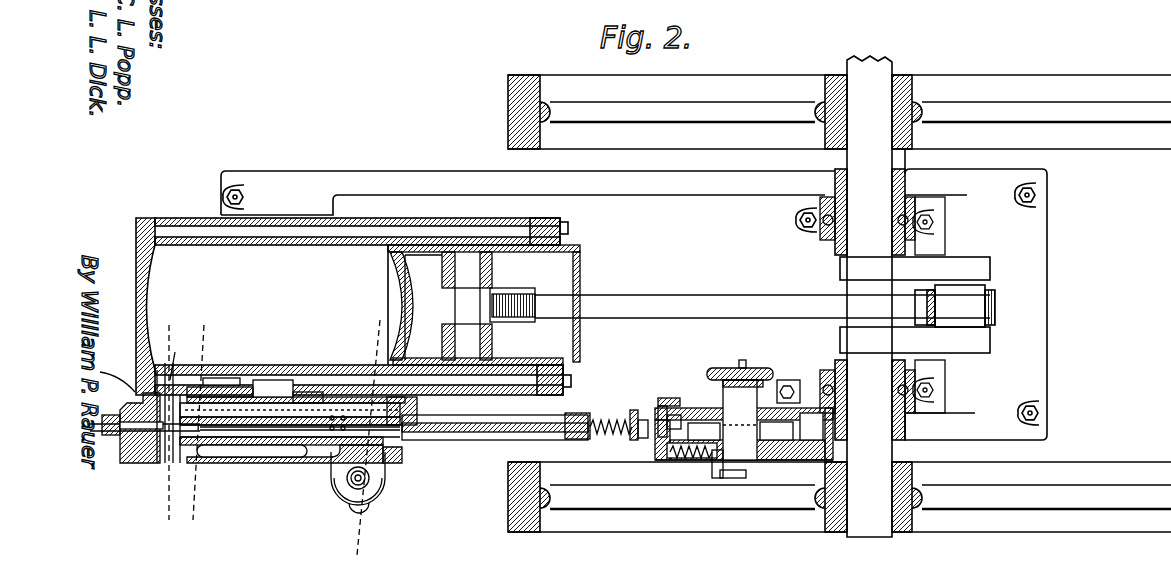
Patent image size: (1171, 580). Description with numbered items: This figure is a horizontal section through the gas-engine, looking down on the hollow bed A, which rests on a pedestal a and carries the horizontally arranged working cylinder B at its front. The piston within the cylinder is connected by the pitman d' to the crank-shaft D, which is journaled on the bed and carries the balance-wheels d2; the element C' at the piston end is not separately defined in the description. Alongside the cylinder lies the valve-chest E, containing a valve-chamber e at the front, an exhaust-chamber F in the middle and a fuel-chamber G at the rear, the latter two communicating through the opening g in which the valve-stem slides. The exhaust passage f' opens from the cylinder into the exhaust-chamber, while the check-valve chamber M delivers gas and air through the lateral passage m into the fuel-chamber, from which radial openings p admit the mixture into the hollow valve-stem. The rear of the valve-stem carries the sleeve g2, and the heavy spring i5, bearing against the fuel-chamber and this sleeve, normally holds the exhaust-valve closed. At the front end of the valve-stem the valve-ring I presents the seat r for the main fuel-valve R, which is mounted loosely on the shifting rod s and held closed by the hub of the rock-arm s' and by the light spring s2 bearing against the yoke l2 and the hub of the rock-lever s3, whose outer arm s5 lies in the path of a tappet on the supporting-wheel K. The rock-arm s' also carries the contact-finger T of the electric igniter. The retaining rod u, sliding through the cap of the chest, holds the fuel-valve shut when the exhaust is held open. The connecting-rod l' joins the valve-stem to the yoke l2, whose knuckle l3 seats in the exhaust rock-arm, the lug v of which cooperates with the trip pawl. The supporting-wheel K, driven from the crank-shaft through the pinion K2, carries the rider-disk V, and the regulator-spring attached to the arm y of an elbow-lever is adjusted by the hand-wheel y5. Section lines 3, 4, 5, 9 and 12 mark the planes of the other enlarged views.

The hollow bed A is at (430, 196).
The working cylinder B is at (353, 306).
The cylinder head / piston C' is at (470, 305).
The crank-shaft D is at (870, 296).
The pedestal a is at (905, 186).
The pitman d' is at (765, 305).
The balance-wheels d2 is at (839, 305).
The section line 3 3 is at (366, 440).
The section line 4 4 is at (196, 424).
The section line 5 5 is at (166, 424).
The shifting rod s is at (292, 430).
The supporting-wheel K is at (475, 419).
The holding or retaining rod u is at (130, 472).
The valve-chamber e is at (140, 390).
The main fuel-valve R is at (176, 356).
The contact or finger T is at (155, 486).
The rock-arm s' is at (120, 457).
The valve-chest E is at (262, 460).
The exhaust-chamber F is at (290, 455).
The exhaust passage or port f' is at (291, 359).
The fuel-chamber G is at (330, 392).
The radial openings p is at (328, 421).
The sleeve g2 is at (418, 410).
The check-valve chamber M is at (345, 505).
The opening g is at (322, 460).
The heavy spring i5 is at (340, 478).
The lateral passage m is at (392, 470).
The connecting-rod l' is at (495, 419).
The valve-seat r is at (470, 433).
The yoke l2 is at (577, 416).
The light spring s2 is at (600, 437).
The section line 9 9 is at (718, 442).
The outer arm of rock-lever s5 is at (640, 440).
The rock-lever s3 is at (610, 407).
The knuckle l3 is at (655, 420).
The valve-ring I is at (639, 395).
The lug v is at (677, 406).
The section line 12 12 is at (680, 393).
The rider-disk V is at (744, 431).
The hand-wheel y5 is at (718, 368).
The arm of elbow-lever y is at (680, 458).
The pinion K2 is at (912, 465).